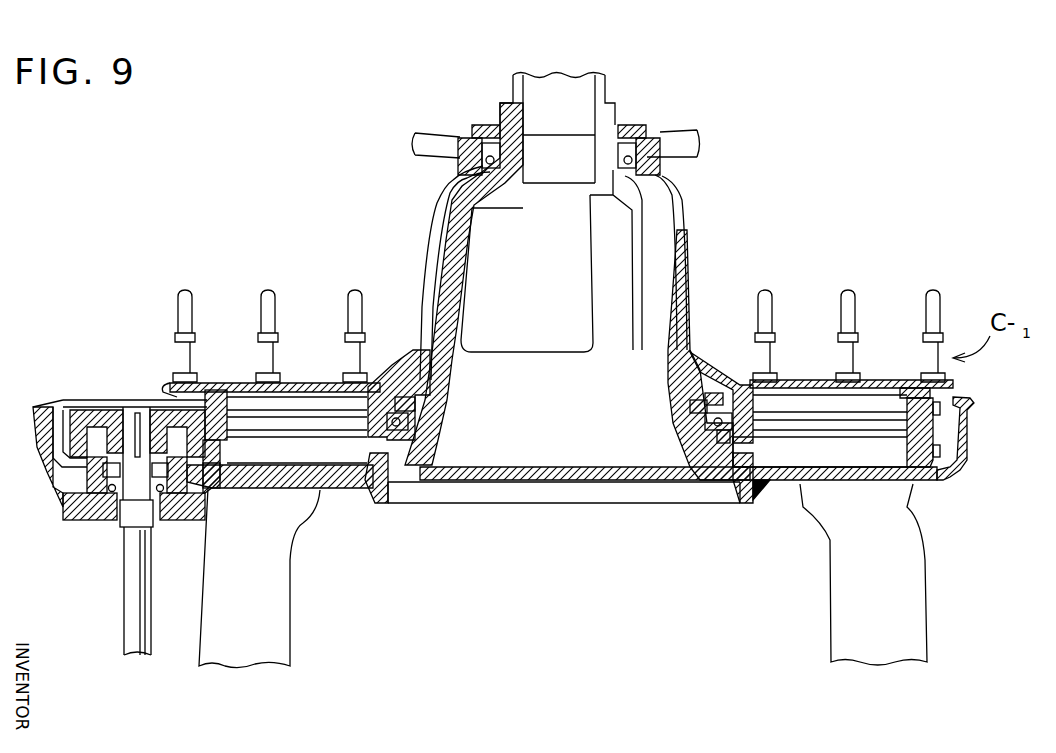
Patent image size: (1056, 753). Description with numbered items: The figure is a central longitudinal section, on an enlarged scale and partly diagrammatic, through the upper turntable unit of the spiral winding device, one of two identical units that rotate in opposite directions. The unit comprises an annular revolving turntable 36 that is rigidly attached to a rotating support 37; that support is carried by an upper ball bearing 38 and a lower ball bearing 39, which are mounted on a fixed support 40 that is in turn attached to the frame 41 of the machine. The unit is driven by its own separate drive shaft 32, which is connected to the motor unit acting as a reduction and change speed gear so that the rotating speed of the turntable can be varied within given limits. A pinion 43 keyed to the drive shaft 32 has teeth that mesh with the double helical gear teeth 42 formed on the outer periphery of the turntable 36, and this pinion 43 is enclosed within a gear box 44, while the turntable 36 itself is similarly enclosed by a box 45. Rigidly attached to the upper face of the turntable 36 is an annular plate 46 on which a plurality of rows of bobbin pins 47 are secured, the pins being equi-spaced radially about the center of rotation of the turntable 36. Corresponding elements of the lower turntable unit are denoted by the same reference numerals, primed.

The drive shaft 32 is at (137, 607).
The annular revolving turntable 36 is at (1002, 433).
The rotating support 37 is at (413, 368).
The upper ball bearing 38 is at (662, 168).
The lower ball bearing 39 is at (405, 423).
The fixed support 40 is at (673, 370).
The frame 41 is at (282, 535).
The double helical gear teeth 42 is at (938, 410).
The pinion 43 is at (63, 407).
The gear box 44 is at (58, 478).
The box 45 is at (947, 472).
The annular plate 46 is at (242, 387).
The bobbin pins 47 is at (355, 290).